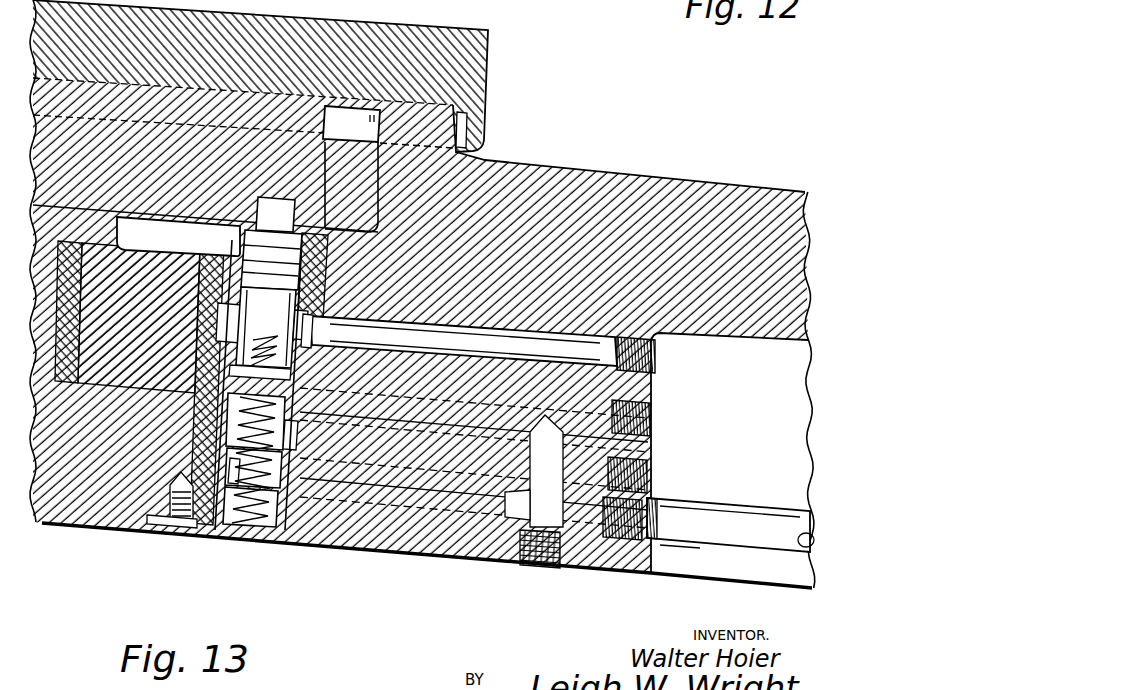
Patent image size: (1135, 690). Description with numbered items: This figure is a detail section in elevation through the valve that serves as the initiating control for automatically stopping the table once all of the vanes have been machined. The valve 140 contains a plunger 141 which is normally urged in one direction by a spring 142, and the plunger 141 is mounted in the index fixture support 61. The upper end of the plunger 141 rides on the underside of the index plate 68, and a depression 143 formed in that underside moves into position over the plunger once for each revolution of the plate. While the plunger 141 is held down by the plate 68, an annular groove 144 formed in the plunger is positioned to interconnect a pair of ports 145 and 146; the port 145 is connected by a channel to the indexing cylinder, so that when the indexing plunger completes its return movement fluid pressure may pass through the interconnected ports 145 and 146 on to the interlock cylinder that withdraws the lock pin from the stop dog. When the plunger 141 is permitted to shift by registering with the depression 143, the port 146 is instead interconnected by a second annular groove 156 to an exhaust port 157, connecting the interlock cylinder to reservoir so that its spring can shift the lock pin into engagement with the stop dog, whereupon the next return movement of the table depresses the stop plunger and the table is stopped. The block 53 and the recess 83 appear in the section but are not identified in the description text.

The upper die block 53 is at (476, 83).
The index fixture support 61 is at (618, 192).
The plate 68 is at (303, 116).
The recess 83 is at (208, 222).
The valve 140 is at (300, 493).
The plunger 141 is at (300, 261).
The spring 142 is at (268, 512).
The depression 143 is at (313, 203).
The annular groove 144 is at (237, 343).
The port 145 is at (233, 323).
The port 146 is at (227, 390).
The annular groove 156 is at (300, 425).
The exhaust port 157 is at (227, 440).